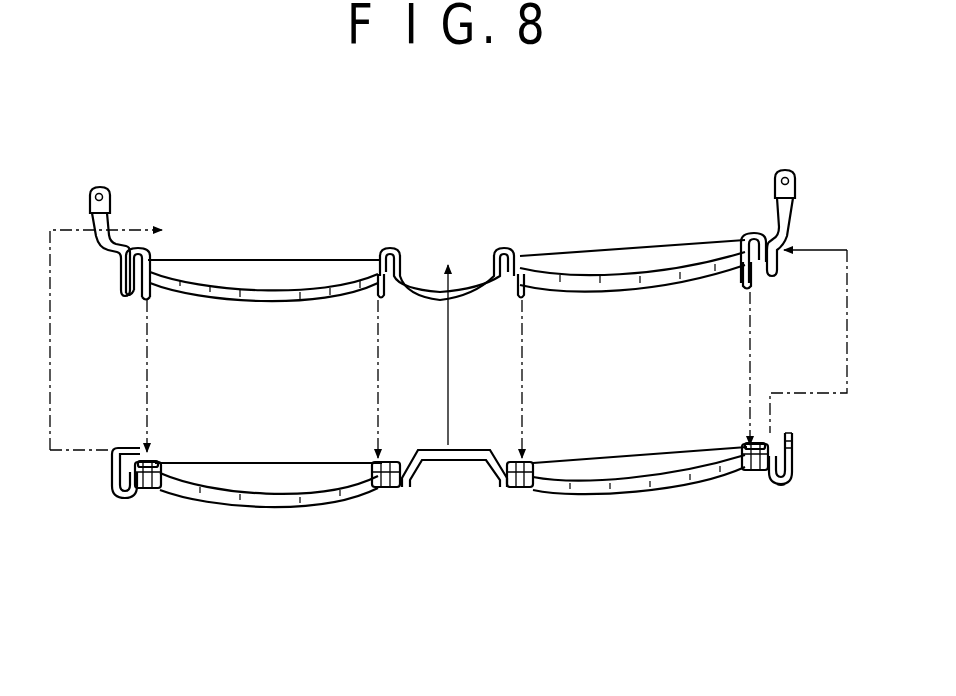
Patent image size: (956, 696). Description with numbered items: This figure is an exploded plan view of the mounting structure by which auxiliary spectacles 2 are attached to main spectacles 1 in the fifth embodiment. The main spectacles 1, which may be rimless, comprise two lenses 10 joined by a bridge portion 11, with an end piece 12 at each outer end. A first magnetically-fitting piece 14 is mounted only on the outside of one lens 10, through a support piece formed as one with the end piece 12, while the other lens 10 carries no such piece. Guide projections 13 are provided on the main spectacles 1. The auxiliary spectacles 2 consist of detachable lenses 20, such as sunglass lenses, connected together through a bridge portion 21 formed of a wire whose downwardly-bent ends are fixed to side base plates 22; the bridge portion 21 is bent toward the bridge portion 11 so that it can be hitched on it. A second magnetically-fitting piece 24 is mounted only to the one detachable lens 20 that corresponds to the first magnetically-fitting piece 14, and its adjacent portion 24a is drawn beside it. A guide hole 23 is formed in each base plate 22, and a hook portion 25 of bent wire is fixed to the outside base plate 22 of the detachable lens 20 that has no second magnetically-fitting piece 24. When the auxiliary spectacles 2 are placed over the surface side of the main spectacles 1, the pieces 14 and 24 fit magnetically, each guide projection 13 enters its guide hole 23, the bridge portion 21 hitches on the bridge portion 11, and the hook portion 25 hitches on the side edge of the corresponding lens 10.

The main spectacles 1 is at (541, 180).
The auxiliary spectacles 2 is at (470, 542).
The lens 10 is at (266, 270).
The bridge portion 11 is at (428, 292).
The end piece 12 is at (108, 219).
The guide projection 13 is at (150, 298).
The first magnetically-fitting piece 14 is at (782, 247).
The detachable lens 20 is at (276, 500).
The bridge portion 21 is at (452, 455).
The base plate 22 is at (163, 472).
The guide hole 23 is at (158, 460).
The second magnetically-fitting piece 24 is at (792, 438).
The hook bent portion 24a is at (790, 480).
The hook portion 25 is at (112, 470).